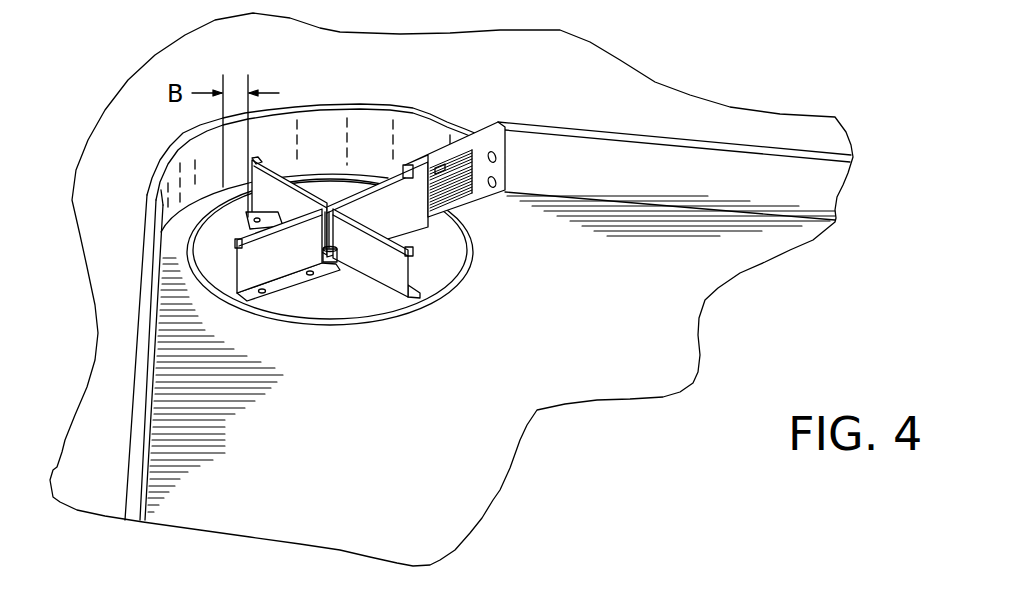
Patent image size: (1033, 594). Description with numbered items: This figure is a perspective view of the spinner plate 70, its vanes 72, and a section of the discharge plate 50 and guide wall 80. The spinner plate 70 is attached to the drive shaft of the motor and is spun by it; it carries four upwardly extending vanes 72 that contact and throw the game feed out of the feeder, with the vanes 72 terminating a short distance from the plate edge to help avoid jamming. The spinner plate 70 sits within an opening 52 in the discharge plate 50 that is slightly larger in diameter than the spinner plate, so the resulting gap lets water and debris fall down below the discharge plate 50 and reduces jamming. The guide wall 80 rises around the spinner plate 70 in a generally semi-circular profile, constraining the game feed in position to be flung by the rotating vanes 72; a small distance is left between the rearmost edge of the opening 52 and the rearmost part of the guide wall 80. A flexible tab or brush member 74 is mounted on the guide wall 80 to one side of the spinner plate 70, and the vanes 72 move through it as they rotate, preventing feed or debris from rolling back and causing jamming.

The discharge plate 50 is at (410, 426).
The opening 52 is at (463, 261).
The spinner plate 70 is at (350, 309).
The vanes 72 is at (410, 224).
The brush member 74 is at (452, 178).
The guide wall 80 is at (318, 138).